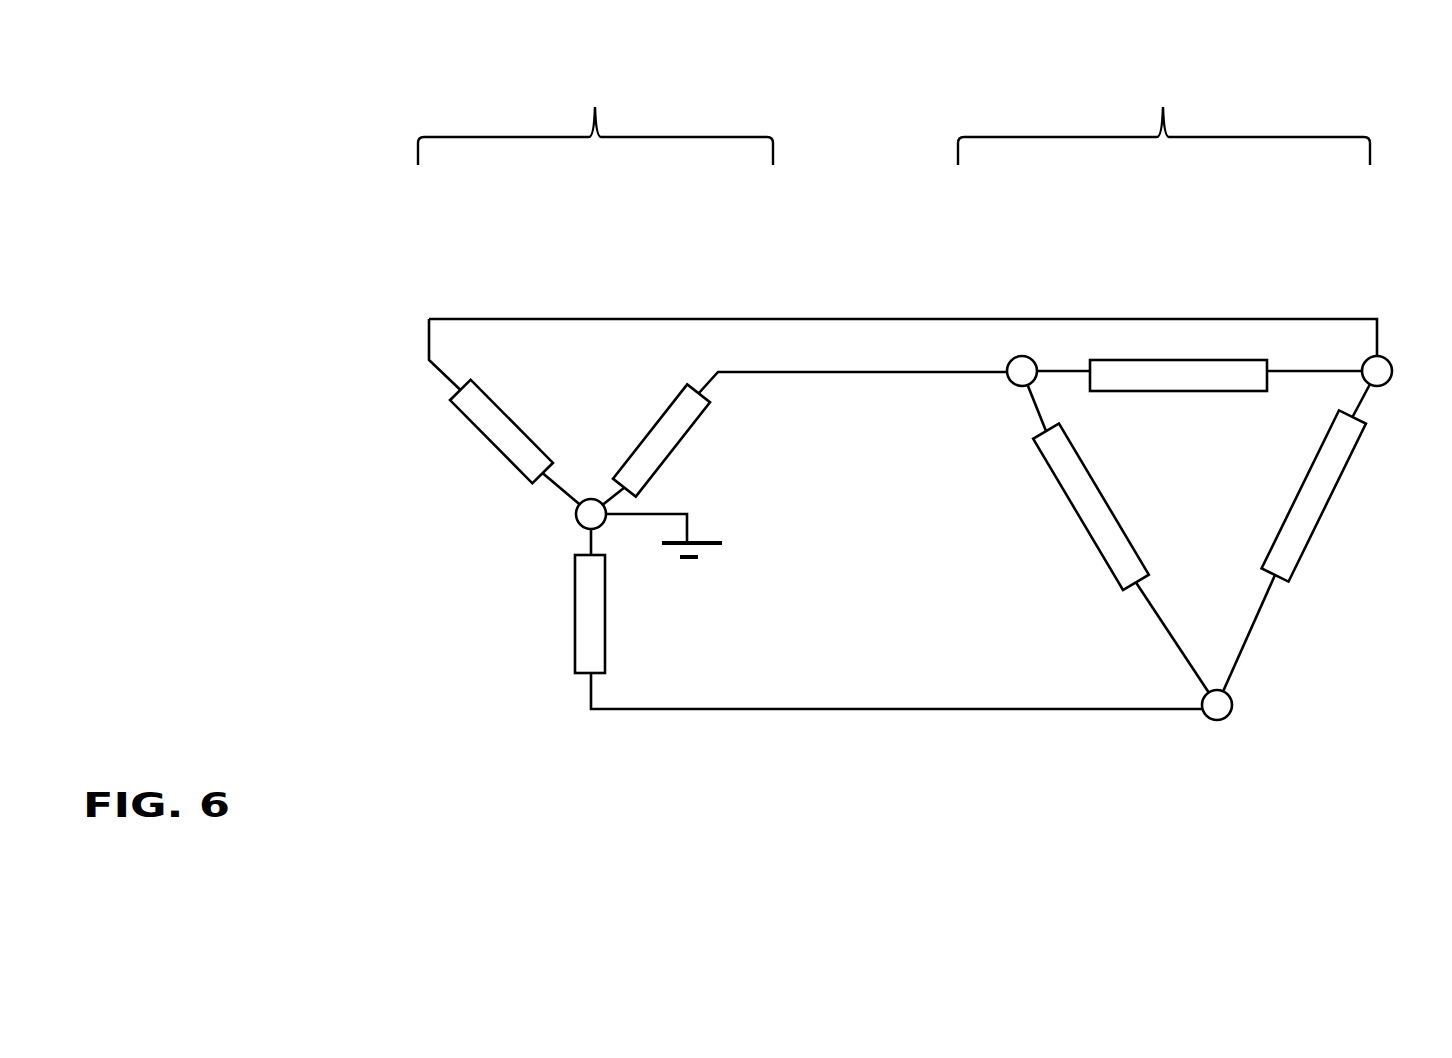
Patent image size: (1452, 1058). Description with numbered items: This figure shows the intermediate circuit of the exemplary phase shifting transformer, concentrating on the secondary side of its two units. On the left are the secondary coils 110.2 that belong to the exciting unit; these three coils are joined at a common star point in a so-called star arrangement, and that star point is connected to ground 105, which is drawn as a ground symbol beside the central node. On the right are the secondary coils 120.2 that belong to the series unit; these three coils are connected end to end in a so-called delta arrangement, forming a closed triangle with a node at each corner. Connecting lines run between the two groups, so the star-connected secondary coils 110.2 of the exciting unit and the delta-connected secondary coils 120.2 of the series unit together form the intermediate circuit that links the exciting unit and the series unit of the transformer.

The secondary coils 110.2 is at (595, 107).
The secondary coils 120.2 is at (1164, 107).
The ground 105 is at (720, 548).